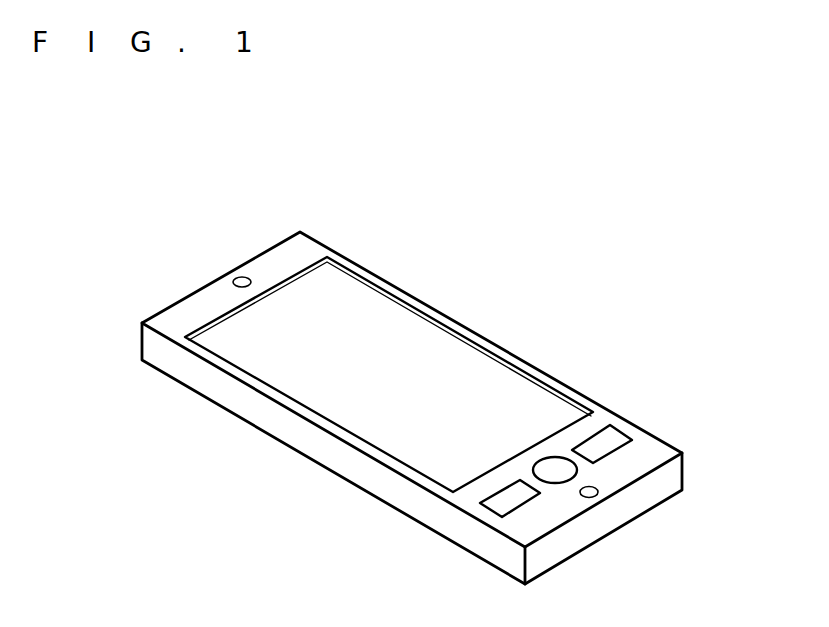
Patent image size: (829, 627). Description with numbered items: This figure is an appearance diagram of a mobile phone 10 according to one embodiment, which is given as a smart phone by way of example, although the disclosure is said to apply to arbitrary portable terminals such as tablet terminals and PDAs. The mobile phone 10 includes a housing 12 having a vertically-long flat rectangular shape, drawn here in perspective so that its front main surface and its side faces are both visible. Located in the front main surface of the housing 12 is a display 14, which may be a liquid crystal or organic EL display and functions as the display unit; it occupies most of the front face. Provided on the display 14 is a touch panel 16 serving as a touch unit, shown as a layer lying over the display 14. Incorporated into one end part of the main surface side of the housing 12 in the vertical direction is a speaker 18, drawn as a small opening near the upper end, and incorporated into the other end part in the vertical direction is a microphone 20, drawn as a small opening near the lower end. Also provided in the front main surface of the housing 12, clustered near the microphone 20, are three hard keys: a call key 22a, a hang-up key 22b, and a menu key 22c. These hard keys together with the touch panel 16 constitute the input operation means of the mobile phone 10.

The mobile phone 10 is at (146, 253).
The housing 12 is at (292, 434).
The display 14 is at (460, 347).
The touch panel 16 is at (513, 371).
The speaker 18 is at (233, 280).
The microphone 20 is at (592, 497).
The call key 22a is at (500, 515).
The hang-up key 22b is at (615, 436).
The menu key 22c is at (577, 472).